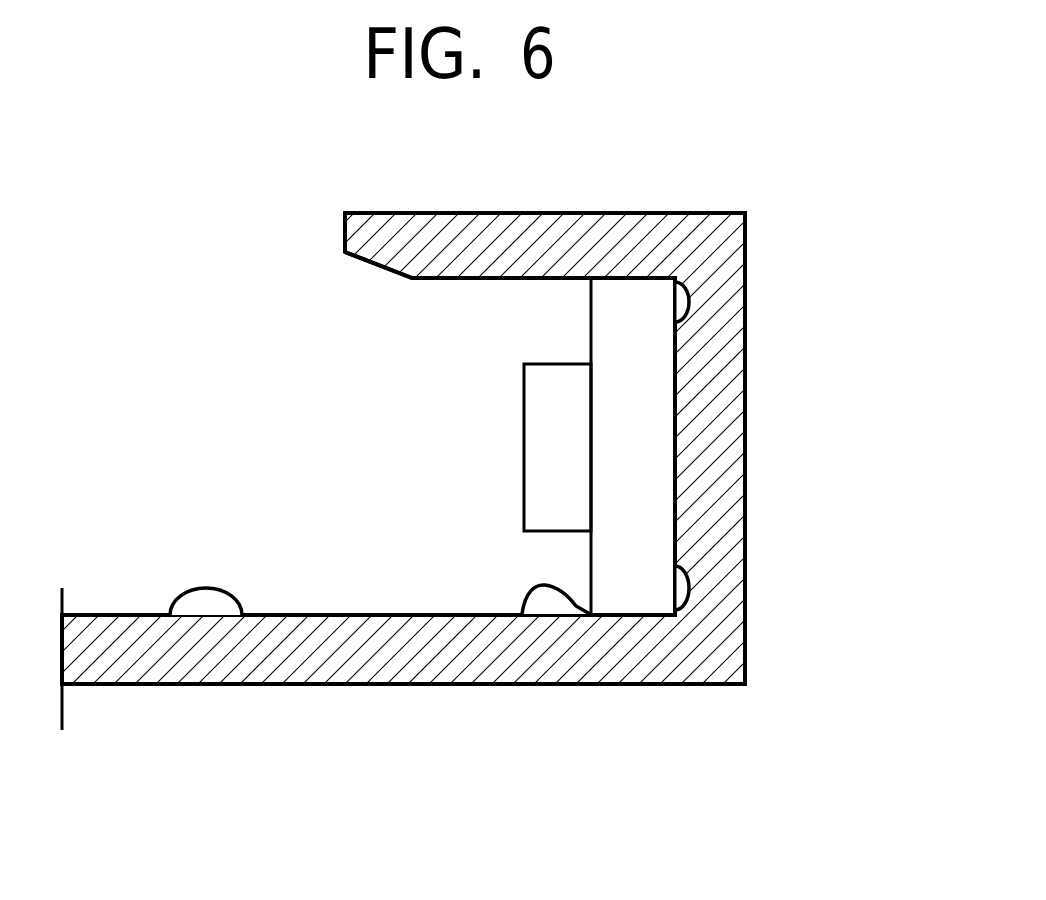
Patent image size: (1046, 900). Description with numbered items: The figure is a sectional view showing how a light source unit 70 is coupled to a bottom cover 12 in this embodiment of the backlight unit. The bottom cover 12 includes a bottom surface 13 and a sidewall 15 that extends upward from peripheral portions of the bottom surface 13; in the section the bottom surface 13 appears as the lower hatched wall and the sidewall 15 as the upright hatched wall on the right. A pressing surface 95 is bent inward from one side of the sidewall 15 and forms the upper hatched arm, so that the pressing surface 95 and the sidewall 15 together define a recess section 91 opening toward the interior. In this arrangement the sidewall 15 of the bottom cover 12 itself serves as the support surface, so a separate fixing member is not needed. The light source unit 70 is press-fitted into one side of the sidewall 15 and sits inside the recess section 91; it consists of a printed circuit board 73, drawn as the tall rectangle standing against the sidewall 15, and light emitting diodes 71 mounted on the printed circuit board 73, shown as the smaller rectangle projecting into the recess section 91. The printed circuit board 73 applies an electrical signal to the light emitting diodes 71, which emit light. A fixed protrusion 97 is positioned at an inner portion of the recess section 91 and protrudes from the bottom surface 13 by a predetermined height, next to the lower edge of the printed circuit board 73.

The bottom cover 12 is at (293, 648).
The bottom surface 13 is at (170, 612).
The sidewall 15 is at (733, 490).
The light source unit 70 is at (507, 407).
The light emitting diodes 71 is at (547, 468).
The printed circuit board 73 is at (610, 563).
The recess section 91 is at (310, 513).
The pressing surface 95 is at (443, 280).
The fixed protrusion 97 is at (523, 592).